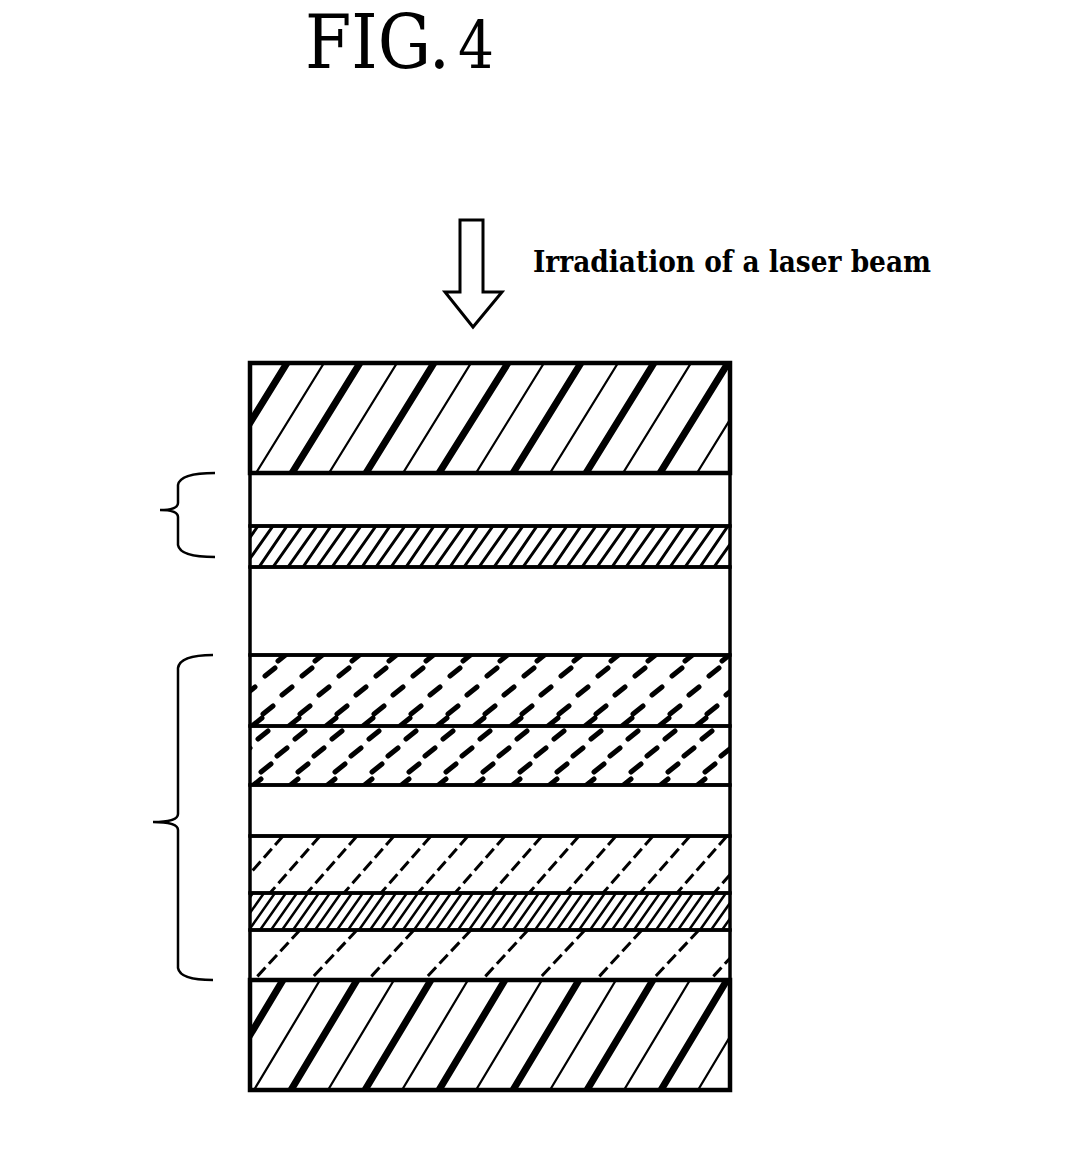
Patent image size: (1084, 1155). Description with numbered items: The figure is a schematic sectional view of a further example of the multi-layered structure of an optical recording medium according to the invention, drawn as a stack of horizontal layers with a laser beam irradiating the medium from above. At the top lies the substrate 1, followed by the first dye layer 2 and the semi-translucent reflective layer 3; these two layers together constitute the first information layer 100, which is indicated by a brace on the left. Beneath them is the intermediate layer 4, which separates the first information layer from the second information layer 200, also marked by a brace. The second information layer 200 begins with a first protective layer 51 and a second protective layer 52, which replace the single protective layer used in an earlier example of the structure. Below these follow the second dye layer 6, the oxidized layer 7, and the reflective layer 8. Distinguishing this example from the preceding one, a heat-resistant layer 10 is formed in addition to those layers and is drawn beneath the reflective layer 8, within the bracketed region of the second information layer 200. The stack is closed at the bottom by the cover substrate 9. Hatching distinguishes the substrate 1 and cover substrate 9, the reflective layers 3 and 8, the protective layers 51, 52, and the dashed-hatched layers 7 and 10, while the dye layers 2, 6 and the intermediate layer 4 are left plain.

The substrate 1 is at (707, 424).
The first dye layer 2 is at (692, 511).
The semi-translucent reflective layer 3 is at (692, 547).
The intermediate layer 4 is at (692, 619).
The first protective layer 51 is at (687, 692).
The second protective layer 52 is at (687, 749).
The second dye layer 6 is at (707, 815).
The oxidized layer 7 is at (707, 873).
The reflective layer 8 is at (693, 909).
The heat-resistant layer 10 is at (707, 960).
The cover substrate 9 is at (707, 1039).
The first information layer 100 is at (131, 515).
The second information layer 200 is at (135, 817).